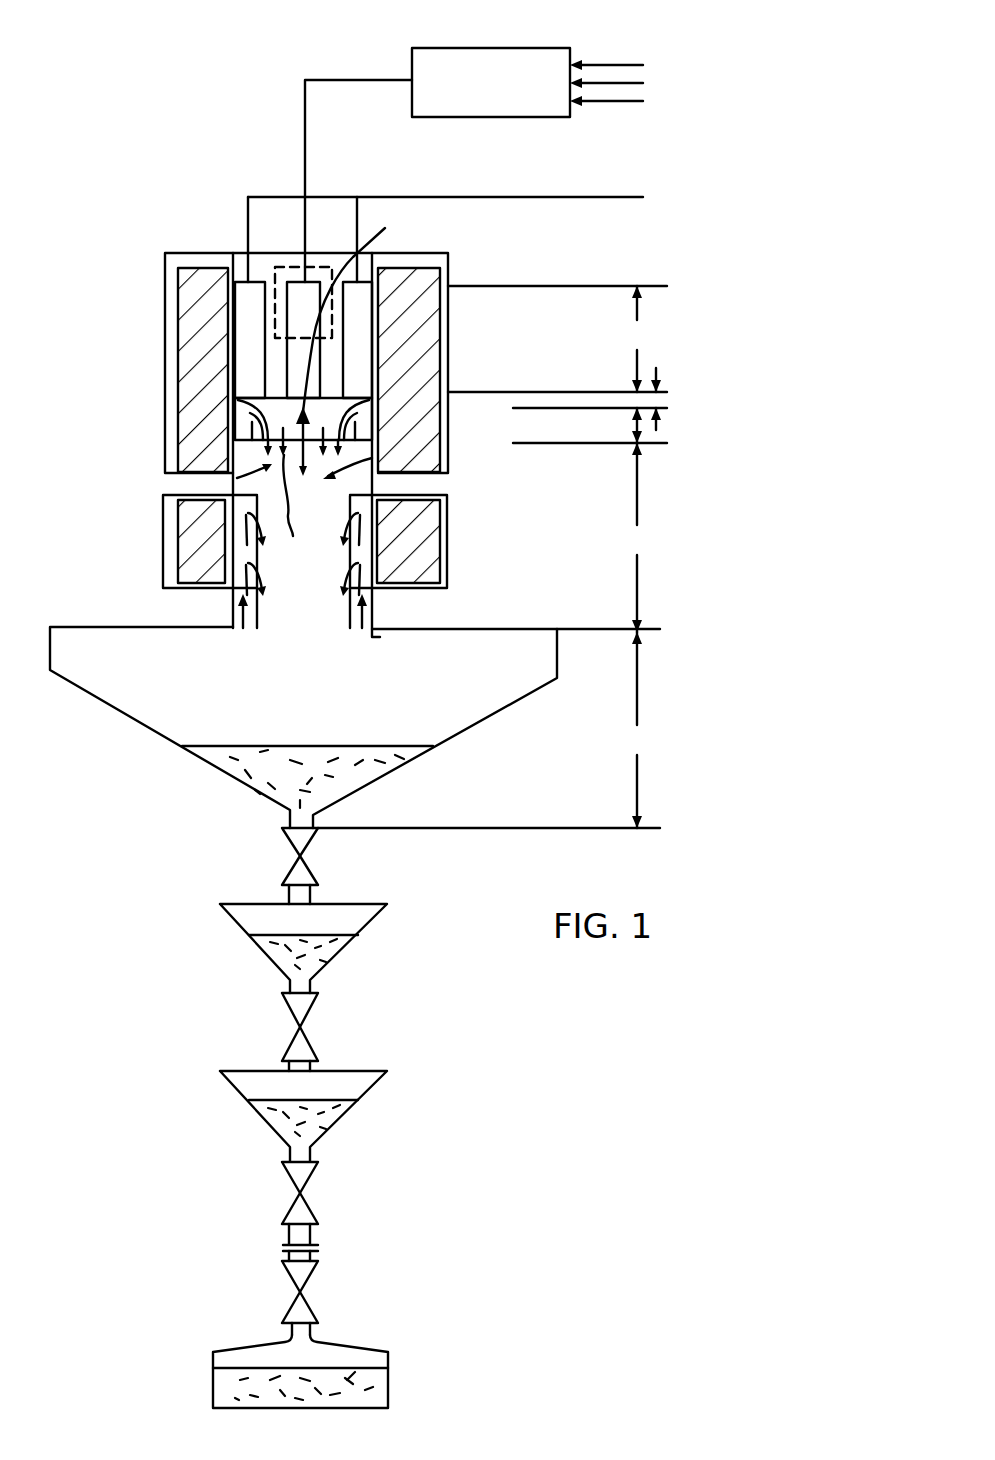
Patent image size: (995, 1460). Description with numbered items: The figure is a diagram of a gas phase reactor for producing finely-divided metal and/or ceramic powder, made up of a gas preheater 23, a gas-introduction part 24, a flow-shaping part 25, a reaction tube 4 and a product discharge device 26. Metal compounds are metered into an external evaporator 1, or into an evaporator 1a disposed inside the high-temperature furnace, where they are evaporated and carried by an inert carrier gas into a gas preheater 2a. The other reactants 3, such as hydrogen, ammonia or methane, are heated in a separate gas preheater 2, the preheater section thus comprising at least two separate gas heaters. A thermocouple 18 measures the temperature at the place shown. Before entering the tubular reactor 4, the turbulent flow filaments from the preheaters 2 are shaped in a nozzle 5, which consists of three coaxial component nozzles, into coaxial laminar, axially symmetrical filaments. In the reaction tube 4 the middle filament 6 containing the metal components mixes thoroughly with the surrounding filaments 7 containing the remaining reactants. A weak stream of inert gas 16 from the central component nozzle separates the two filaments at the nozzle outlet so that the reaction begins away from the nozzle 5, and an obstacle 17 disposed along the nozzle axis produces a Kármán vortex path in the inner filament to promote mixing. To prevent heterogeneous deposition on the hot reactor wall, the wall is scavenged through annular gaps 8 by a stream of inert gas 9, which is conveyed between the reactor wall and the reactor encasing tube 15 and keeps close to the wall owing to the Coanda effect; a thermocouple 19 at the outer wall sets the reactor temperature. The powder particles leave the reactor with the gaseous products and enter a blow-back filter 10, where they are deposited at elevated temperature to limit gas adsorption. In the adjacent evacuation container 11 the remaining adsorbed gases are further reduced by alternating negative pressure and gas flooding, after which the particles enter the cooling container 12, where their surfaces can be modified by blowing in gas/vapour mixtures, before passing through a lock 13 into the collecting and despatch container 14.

The external evaporator 1 is at (445, 55).
The evaporator inside the high-temperature furnace 1a is at (283, 270).
The gas preheater 2 is at (247, 335).
The gas preheater 2a is at (298, 365).
The other reactants 3 is at (570, 197).
The reaction tube 4 is at (440, 488).
The nozzle 5 is at (448, 390).
The middle filament 6 is at (445, 443).
The surrounding filaments 7 is at (257, 475).
The annular gaps 8 is at (440, 532).
The stream of inert gas 9 is at (255, 491).
The blow-back filter 10 is at (132, 708).
The evacuation container 11 is at (240, 925).
The cooling container 12 is at (237, 1093).
The lock 13 is at (287, 1237).
The collecting and despatch container 14 is at (225, 1360).
The reactor encasing tube 15 is at (440, 558).
The stream of inert gas 16 is at (293, 506).
The obstacle 17 is at (354, 315).
The thermocouple 18 is at (273, 360).
The thermocouple 19 is at (247, 480).
The gas preheater 23 is at (557, 339).
The gas-introduction part 24 is at (660, 398).
The flow-shaping part 25 is at (655, 426).
The product discharge device 26 is at (489, 730).